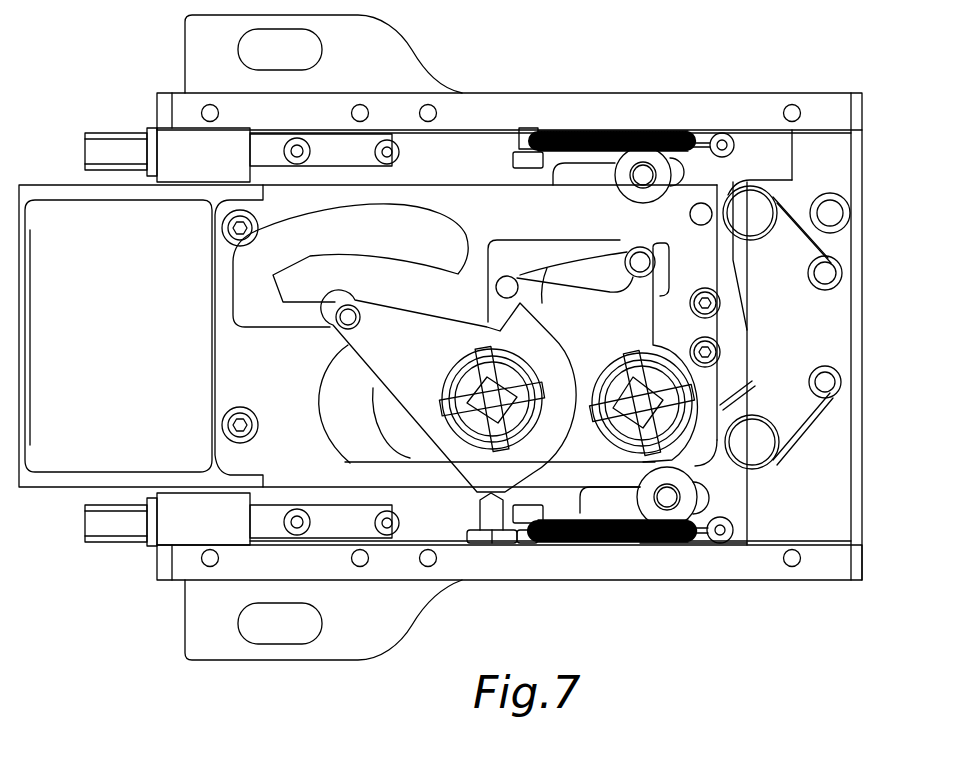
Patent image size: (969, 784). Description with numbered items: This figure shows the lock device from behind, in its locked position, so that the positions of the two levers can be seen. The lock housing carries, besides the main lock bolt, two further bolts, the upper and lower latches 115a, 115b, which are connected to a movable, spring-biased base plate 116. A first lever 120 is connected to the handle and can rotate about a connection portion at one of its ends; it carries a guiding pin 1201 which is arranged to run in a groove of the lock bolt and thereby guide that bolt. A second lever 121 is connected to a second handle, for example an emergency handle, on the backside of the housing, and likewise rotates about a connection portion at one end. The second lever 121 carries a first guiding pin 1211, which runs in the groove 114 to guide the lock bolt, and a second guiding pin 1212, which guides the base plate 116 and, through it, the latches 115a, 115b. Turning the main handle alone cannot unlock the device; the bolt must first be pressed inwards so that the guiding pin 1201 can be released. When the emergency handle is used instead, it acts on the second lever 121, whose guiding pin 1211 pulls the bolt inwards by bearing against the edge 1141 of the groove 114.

The groove 114 is at (563, 260).
The edge of the groove 1141 is at (668, 292).
The upper latch 115a is at (112, 522).
The lower latch 115b is at (110, 147).
The movable base plate 116 is at (238, 380).
The first lever 120 is at (397, 340).
The guiding pin 1201 is at (353, 313).
The second lever 121 is at (553, 263).
The first guiding pin 1211 is at (628, 257).
The second guiding pin 1212 is at (500, 292).